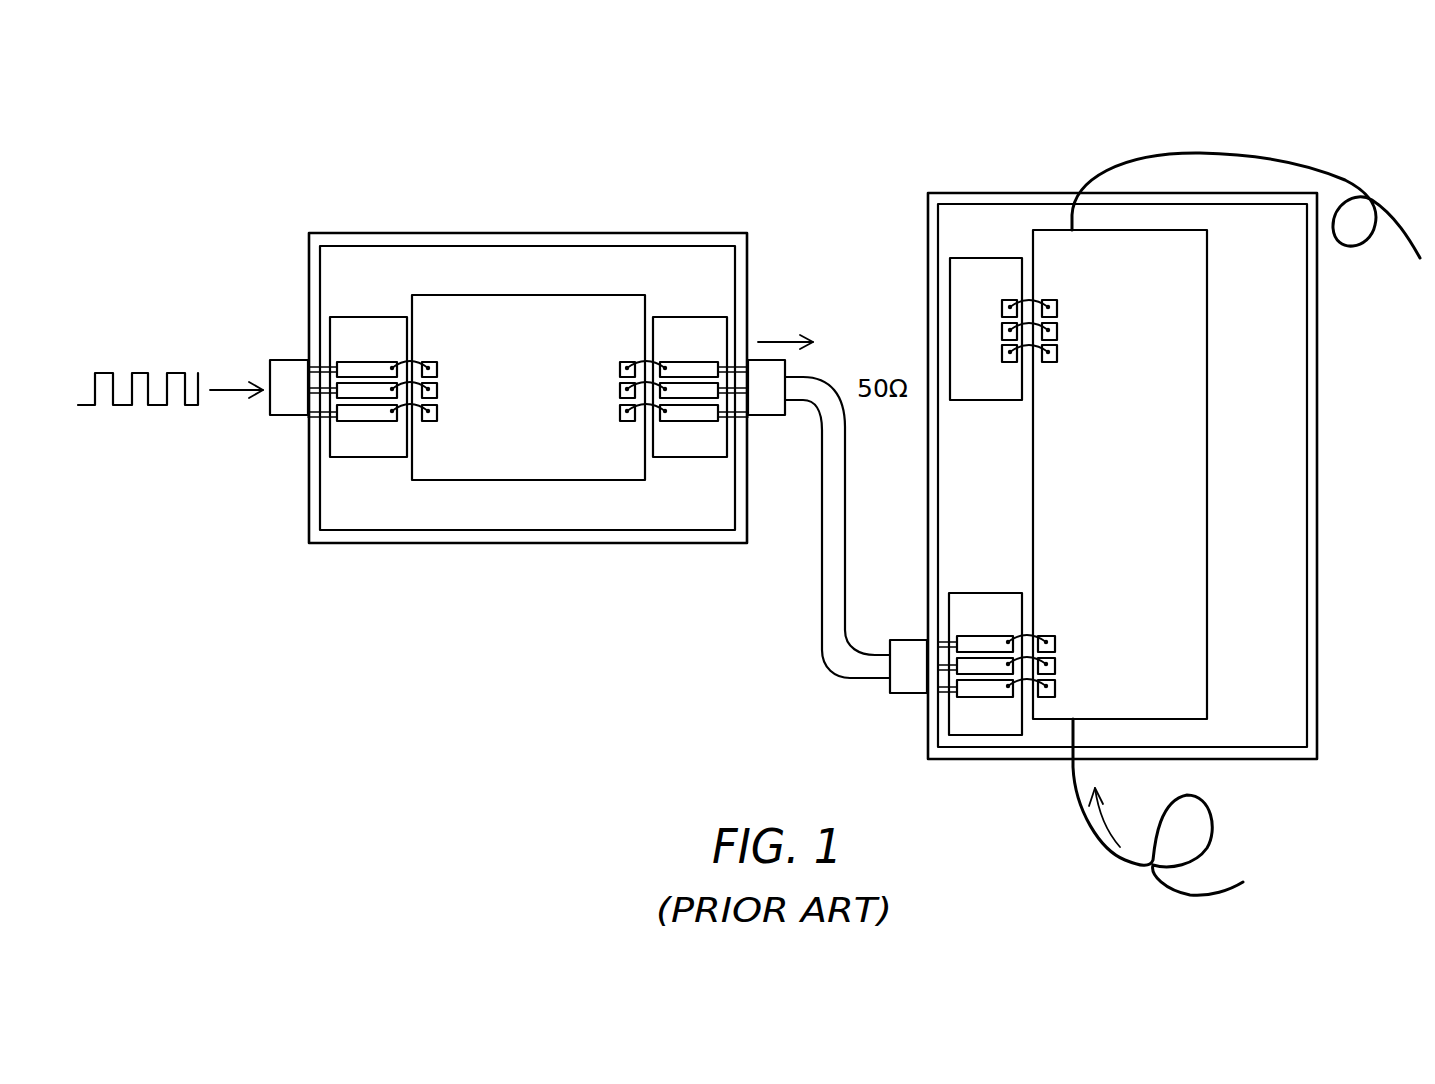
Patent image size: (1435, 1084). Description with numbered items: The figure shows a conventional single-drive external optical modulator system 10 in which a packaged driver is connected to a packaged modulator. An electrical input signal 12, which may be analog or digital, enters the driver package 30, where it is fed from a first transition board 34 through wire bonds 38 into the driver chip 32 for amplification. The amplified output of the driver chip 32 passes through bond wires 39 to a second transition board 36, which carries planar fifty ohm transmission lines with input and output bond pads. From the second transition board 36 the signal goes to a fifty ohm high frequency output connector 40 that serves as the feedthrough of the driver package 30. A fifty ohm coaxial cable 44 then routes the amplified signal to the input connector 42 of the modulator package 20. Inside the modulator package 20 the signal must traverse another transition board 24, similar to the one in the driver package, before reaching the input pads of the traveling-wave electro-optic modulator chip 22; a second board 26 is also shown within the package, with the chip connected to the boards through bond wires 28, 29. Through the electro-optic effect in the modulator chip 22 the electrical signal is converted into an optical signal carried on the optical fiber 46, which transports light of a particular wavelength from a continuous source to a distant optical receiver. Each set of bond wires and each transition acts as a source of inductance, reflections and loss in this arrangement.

The optical transmitter system 10 is at (837, 168).
The electrical input signal 12 is at (138, 373).
The modulator package 20 is at (1320, 435).
The modulator chip 22 is at (1200, 485).
The transition board 24 is at (984, 730).
The modulator bias substrate 26 is at (980, 342).
The bond wires 28 is at (1022, 623).
The bond wires 29 is at (1017, 300).
The driver package 30 is at (534, 232).
The driver chip 32 is at (528, 307).
The first transition board 34 is at (365, 430).
The second transition board 36 is at (692, 432).
The wire bonds 38 is at (398, 352).
The bond wires 39 is at (662, 350).
The high frequency output connector 40 is at (765, 415).
The input connector 42 is at (903, 695).
The coaxial cable 44 is at (847, 484).
The optical fiber 46 is at (1213, 832).